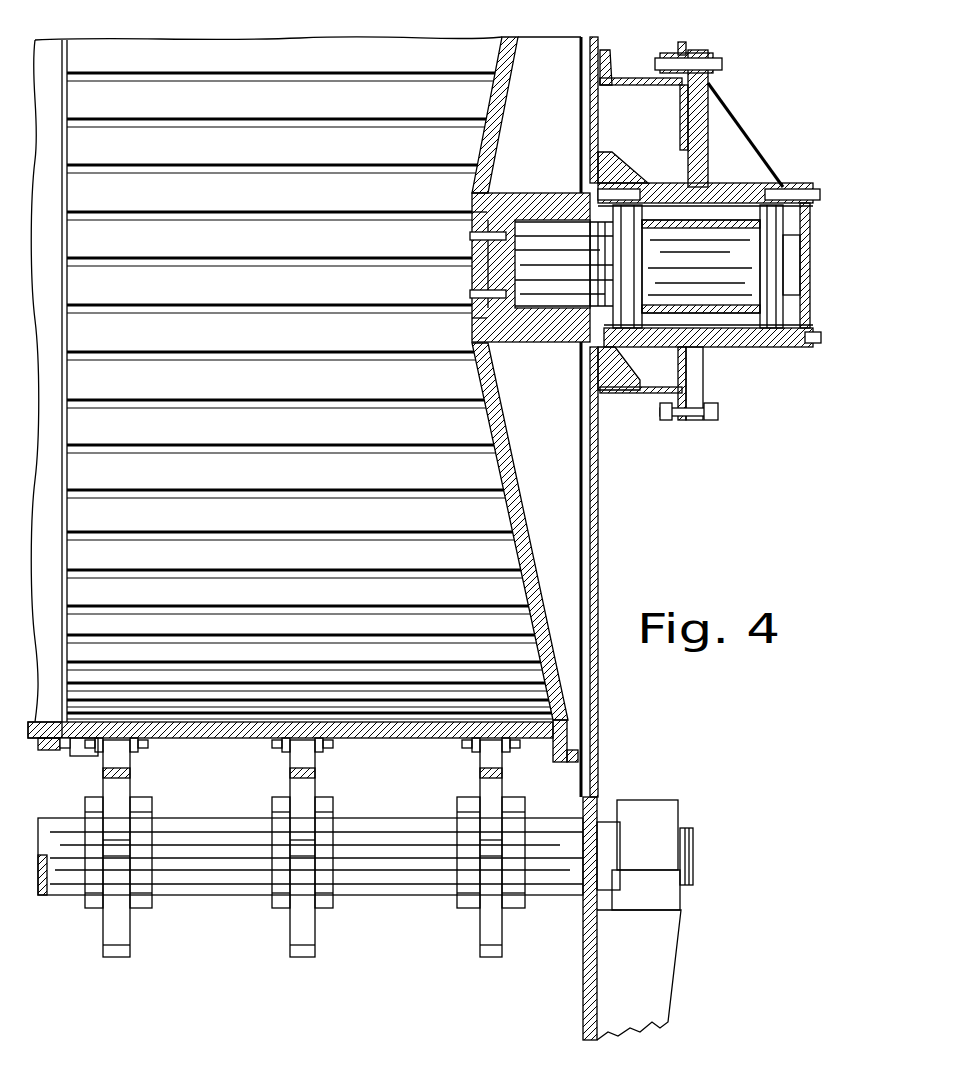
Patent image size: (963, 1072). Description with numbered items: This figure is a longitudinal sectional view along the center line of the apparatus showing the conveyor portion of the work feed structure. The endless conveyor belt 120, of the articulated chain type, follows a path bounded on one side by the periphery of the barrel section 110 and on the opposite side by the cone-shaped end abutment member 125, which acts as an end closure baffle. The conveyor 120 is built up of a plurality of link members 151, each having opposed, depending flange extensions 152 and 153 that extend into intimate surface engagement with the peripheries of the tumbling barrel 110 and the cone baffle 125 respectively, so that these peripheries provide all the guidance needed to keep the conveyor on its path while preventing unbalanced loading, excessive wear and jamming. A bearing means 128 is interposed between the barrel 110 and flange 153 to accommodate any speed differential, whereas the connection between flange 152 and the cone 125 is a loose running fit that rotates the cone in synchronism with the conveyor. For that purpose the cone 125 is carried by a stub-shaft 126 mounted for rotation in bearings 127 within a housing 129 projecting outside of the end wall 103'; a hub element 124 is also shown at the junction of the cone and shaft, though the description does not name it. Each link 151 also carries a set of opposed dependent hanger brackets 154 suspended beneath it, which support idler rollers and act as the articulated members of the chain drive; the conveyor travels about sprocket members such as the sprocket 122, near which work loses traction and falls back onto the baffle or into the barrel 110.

The endless conveyor belt 120 is at (408, 56).
The cone-shaped end abutment member 125 is at (493, 130).
The hub 124 is at (470, 273).
The stub-shaft 126 is at (740, 280).
The bearings 127 is at (688, 143).
The housing 129 is at (640, 398).
The end wall 103' is at (620, 538).
The barrel section 110 is at (50, 720).
The link members 151 is at (213, 740).
The bearing means 128 is at (42, 752).
The depending flange extension 153 is at (75, 757).
The hanger brackets 154 is at (140, 768).
The depending flange extension 152 is at (553, 763).
The sprocket member 122 is at (125, 935).